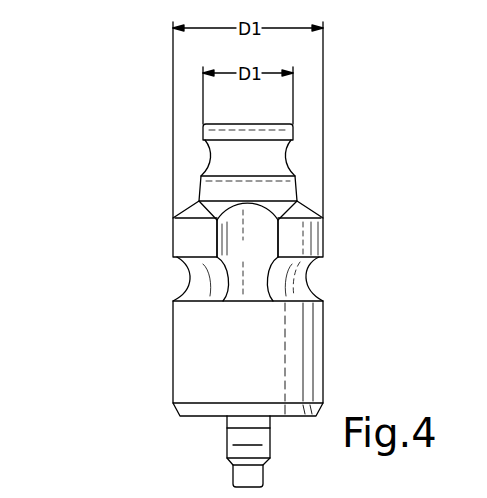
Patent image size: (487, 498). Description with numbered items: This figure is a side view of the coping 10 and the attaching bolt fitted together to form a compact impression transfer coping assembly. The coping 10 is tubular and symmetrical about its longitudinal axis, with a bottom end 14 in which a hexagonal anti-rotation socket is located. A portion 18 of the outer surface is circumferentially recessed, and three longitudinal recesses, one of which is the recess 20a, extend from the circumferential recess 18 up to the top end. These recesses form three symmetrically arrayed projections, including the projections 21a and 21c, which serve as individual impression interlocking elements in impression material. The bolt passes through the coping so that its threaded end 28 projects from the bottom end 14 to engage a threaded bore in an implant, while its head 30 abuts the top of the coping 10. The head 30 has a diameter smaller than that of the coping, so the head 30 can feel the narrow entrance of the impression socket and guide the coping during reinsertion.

The coping 10 is at (326, 368).
The bottom end 14 is at (187, 417).
The circumferential recess 18 is at (305, 271).
The longitudinal recess 20a is at (250, 242).
The projection 21a is at (185, 232).
The projection 21c is at (324, 222).
The threaded end 28 is at (270, 447).
The head 30 is at (199, 190).